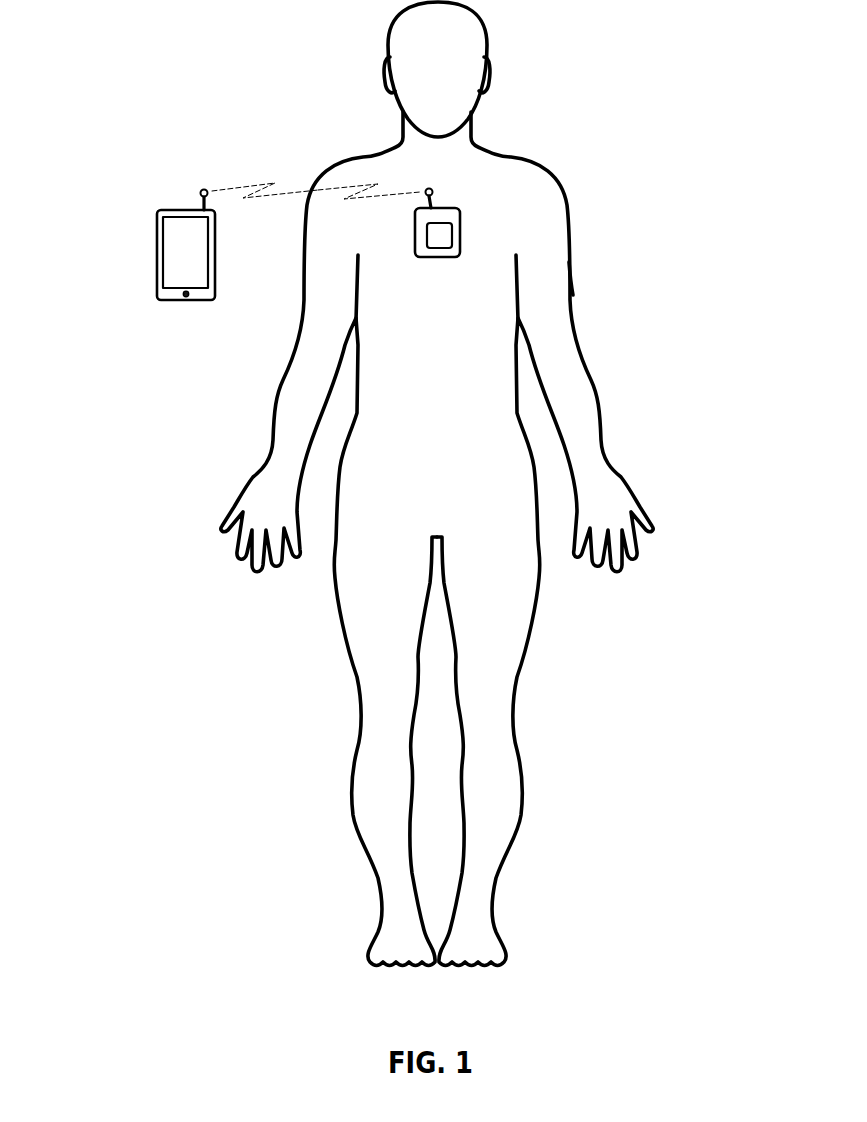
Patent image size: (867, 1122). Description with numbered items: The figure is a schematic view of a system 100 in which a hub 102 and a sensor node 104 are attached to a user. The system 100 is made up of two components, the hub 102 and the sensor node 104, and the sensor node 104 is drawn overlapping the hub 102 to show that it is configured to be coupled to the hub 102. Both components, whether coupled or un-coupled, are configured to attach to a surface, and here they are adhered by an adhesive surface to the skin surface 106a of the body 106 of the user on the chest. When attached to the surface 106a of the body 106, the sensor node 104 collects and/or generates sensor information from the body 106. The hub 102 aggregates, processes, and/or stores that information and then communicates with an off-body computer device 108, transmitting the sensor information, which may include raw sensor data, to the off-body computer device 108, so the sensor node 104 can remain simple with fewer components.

The system 100 is at (431, 176).
The hub 102 is at (532, 212).
The sensor node 104 is at (452, 232).
The body 106 is at (627, 351).
The surface 106a is at (571, 275).
The off-body computer device 108 is at (157, 231).